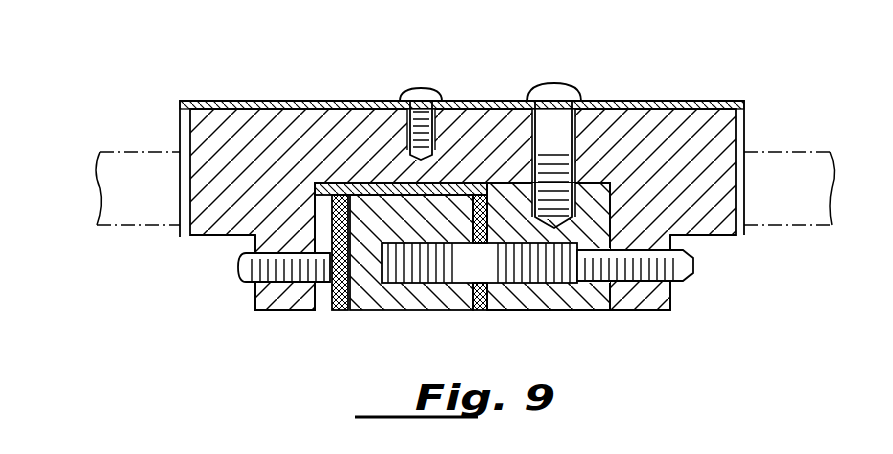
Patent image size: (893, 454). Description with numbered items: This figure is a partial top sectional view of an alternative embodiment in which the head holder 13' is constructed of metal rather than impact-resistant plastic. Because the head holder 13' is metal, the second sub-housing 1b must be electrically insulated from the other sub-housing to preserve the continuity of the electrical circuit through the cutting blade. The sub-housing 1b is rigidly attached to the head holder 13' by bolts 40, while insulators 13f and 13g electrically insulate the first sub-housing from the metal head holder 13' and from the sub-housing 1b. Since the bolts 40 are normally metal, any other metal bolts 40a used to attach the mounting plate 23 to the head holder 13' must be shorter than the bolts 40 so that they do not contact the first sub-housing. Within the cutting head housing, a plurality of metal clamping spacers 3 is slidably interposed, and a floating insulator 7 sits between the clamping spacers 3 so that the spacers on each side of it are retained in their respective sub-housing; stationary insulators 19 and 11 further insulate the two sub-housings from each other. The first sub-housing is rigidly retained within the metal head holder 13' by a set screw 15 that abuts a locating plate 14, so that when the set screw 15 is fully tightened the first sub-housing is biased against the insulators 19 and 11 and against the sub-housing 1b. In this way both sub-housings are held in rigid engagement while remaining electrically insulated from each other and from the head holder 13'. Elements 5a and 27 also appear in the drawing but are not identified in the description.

The second sub-housing 1b is at (600, 290).
The clamping spacers 3 is at (378, 310).
The nut block 5a is at (432, 308).
The floating insulator 7 is at (470, 268).
The stationary insulator 11 is at (481, 290).
The insulator 13f is at (340, 183).
The insulator 13g is at (388, 183).
The metal head holder 13' is at (463, 176).
The locating plate 14 is at (330, 310).
The set screw 15 is at (265, 262).
The stationary insulator 19 is at (478, 183).
The mounting plate 23 is at (710, 103).
The adjusting screw 27 is at (680, 270).
The bolts 40 is at (556, 115).
The bolts 40a is at (420, 100).